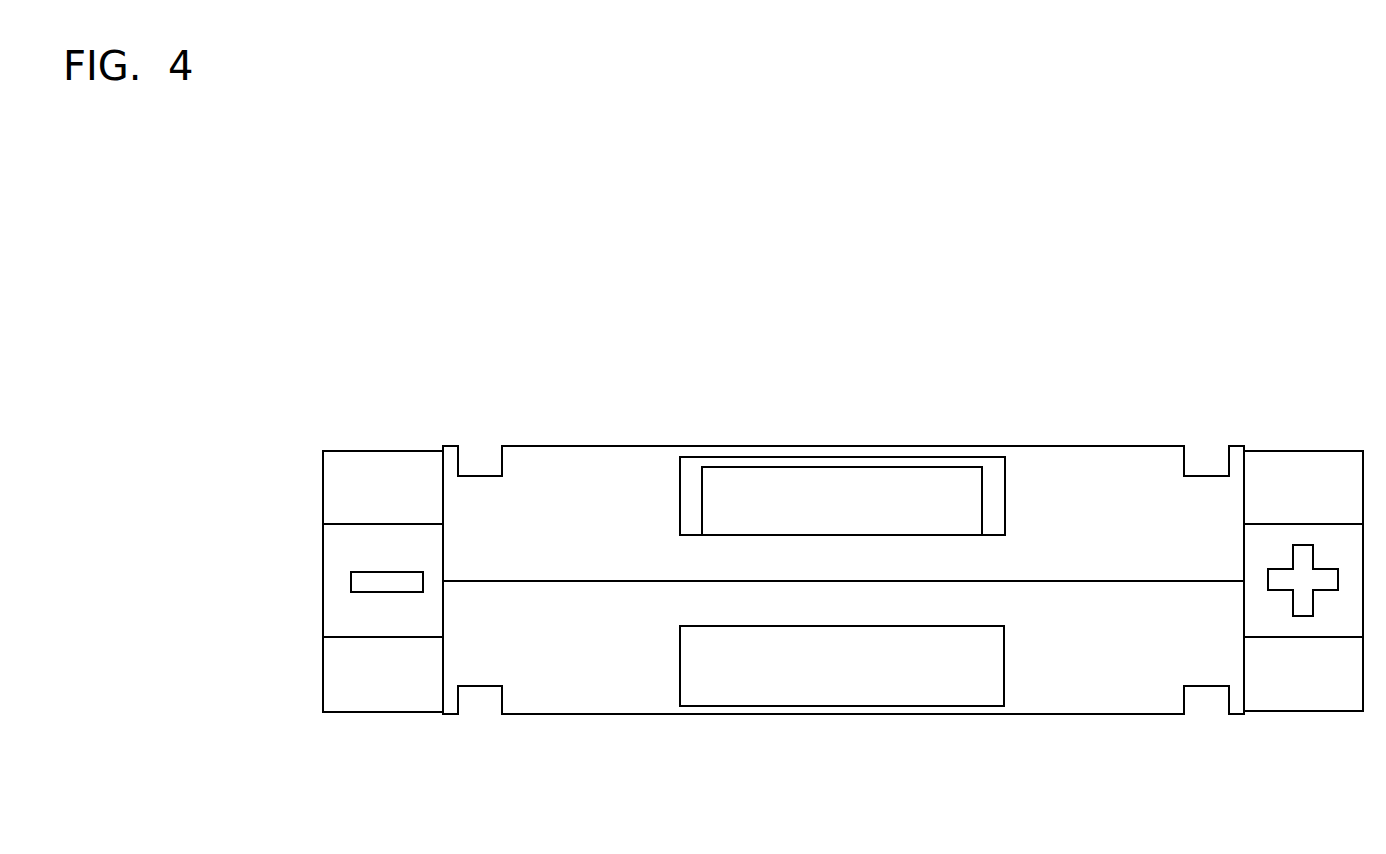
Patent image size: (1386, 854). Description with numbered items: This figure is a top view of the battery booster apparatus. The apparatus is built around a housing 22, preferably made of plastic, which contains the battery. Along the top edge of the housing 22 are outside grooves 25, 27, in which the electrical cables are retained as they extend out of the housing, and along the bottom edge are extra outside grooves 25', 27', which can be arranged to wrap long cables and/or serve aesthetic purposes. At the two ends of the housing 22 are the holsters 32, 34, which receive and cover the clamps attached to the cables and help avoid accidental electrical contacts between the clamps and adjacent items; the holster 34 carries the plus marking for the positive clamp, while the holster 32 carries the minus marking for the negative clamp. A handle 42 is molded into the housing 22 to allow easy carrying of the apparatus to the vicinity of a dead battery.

The housing 22 is at (1058, 446).
The outside groove 25 is at (491, 418).
The extra outside groove 25' is at (494, 742).
The outside groove 27 is at (1219, 411).
The extra outside groove 27' is at (1217, 750).
The holster 32 is at (382, 450).
The holster 34 is at (1318, 450).
The handle 42 is at (958, 503).